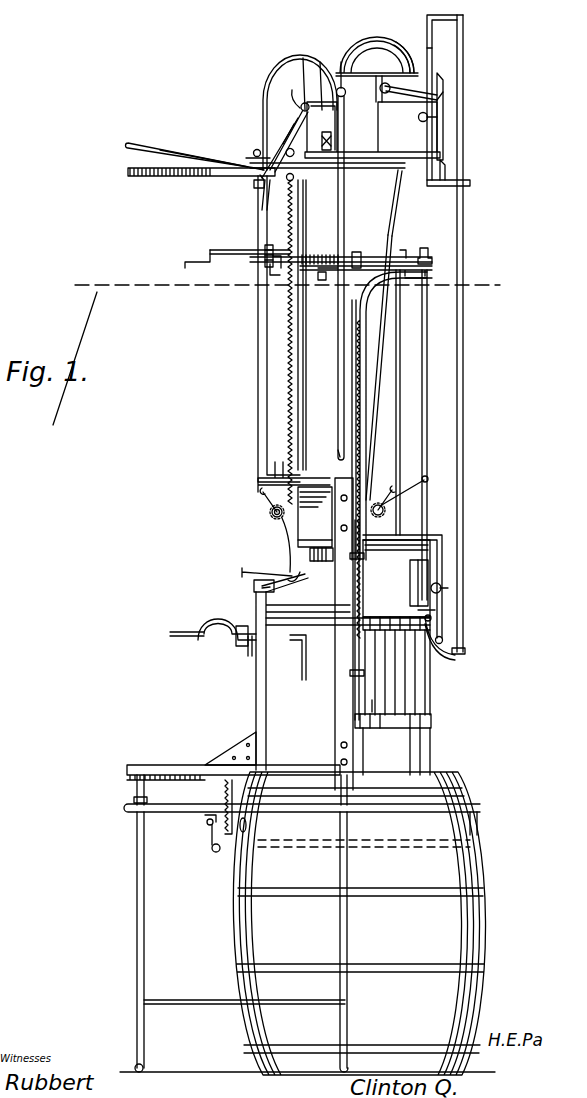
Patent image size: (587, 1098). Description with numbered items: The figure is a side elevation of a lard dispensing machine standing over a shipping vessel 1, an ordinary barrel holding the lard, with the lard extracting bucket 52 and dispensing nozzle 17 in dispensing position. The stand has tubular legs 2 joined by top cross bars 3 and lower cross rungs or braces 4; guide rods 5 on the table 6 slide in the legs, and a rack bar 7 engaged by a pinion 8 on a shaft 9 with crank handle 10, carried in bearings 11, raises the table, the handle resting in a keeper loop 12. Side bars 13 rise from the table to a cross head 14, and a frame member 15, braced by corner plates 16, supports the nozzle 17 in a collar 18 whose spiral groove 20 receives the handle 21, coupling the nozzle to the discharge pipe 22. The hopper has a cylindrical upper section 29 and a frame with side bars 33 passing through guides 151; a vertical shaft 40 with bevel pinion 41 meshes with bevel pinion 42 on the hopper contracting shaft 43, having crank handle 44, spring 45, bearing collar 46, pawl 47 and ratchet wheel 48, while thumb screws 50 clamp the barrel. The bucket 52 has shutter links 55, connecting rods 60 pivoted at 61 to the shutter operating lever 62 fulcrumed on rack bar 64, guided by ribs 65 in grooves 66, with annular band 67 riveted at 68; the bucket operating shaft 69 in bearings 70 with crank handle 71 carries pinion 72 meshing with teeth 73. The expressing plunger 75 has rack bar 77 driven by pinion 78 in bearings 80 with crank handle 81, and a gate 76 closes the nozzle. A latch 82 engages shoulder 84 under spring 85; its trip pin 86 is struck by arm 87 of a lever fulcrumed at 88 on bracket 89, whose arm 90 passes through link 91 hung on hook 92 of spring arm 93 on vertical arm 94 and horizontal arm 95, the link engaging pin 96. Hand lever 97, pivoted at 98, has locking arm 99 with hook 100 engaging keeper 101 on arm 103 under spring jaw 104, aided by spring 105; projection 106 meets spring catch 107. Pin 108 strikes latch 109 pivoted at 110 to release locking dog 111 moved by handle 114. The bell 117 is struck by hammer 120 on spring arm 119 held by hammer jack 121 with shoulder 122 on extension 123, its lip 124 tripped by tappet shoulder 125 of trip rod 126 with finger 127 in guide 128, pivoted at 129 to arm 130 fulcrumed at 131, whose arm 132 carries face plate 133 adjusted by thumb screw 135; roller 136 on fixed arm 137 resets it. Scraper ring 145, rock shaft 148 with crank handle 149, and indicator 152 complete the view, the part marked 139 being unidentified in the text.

The shipping vessel 1 is at (480, 932).
The legs 2 is at (135, 962).
The top cross bars 3 is at (126, 808).
The cross rungs or braces 4 is at (206, 1006).
The guide rods 5 is at (133, 790).
The table 6 is at (125, 770).
The rack bar 7 is at (295, 286).
The pinion 8 is at (207, 825).
The shaft 9 is at (212, 840).
The crank handle 10 is at (215, 853).
The bearings 11 is at (205, 818).
The keeper loop 12 is at (262, 840).
The side bars 13 is at (335, 650).
The cross head 14 is at (315, 517).
The frame member 15 is at (255, 705).
The corner plates or braces 16 is at (236, 756).
The dispensing nozzle 17 is at (205, 616).
The collar 18 is at (256, 590).
The spiral groove 20 is at (236, 642).
The handle 21 is at (248, 652).
The discharge pipe 22 is at (304, 680).
The cylindrical upper section 29 is at (431, 748).
The side bars 33 is at (352, 402).
The vertical shaft 40 is at (428, 384).
The bevel pinion 41 is at (434, 260).
The bevel pinion 42 is at (426, 250).
The hopper contracting shaft 43 is at (226, 250).
The crank handle 44 is at (195, 262).
The spring 45 is at (322, 250).
The fixed bearing collar 46 is at (358, 252).
The pawl 47 is at (271, 245).
The ratchet wheel 48 is at (268, 272).
The thumb screws or nuts 50 is at (348, 762).
The lard extracting bucket 52 is at (468, 693).
The links 55 is at (372, 706).
The connecting rods 60 is at (376, 412).
The pivot 61 is at (400, 185).
The shutter operating lever 62 is at (130, 178).
The rack bar 64 is at (304, 323).
The guide ribs 65 is at (294, 181).
The grooves 66 is at (297, 350).
The annular band 67 is at (332, 640).
The rivets 68 is at (380, 617).
The bucket operating shaft 69 is at (274, 511).
The bearings 70 is at (284, 520).
The crank handle 71 is at (260, 490).
The pinion 72 is at (270, 512).
The teeth 73 is at (288, 375).
The expressing plunger 75 is at (396, 578).
The gate or shutter 76 is at (168, 634).
The rack bar 77 is at (368, 325).
The pinion 78 is at (385, 510).
The bearings 80 is at (382, 490).
The crank handle 81 is at (427, 478).
The latch 82 is at (285, 135).
The shoulder 84 is at (300, 108).
The spring 85 is at (253, 152).
The trip pin 86 is at (290, 130).
The arm 87 is at (321, 64).
The fulcrum 88 is at (304, 58).
The bracket 89 is at (292, 96).
The arm 90 is at (346, 93).
The link 91 is at (345, 192).
The hook 92 is at (372, 80).
The spring arm 93 is at (281, 63).
The vertical arm 94 is at (257, 330).
The horizontal arm 95 is at (312, 477).
The pin 96 is at (322, 282).
The hand operated lever 97 is at (145, 143).
The pivot 98 is at (258, 178).
The locking arm 99 is at (290, 150).
The locking lip or hook 100 is at (337, 111).
The keeper 101 is at (333, 141).
The horizontally projecting arm 103 is at (414, 168).
The spring jaw 104 is at (388, 94).
The spring 105 is at (183, 150).
The projection 106 is at (254, 185).
The spring catch 107 is at (262, 205).
The pin 108 is at (318, 562).
The latch 109 is at (292, 576).
The pivot 110 is at (385, 120).
The locking dog 111 is at (288, 581).
The handle 114 is at (240, 573).
The bell 117 is at (380, 40).
The spring arm 119 is at (402, 62).
The bell hammer 120 is at (413, 88).
The hammer jack 121 is at (447, 96).
The shoulder 122 is at (445, 78).
The extension 123 is at (440, 135).
The lip 124 is at (430, 115).
The tappet shoulder 125 is at (447, 163).
The trip rod 126 is at (464, 230).
The depressing finger 127 is at (437, 48).
The guide 128 is at (472, 183).
The pivot 129 is at (466, 650).
The arm 130 is at (456, 657).
The fulcrum 131 is at (432, 612).
The arm 132 is at (450, 583).
The adjustable face plate 133 is at (410, 585).
The thumb screw 135 is at (442, 586).
The roller 136 is at (444, 638).
The fixed arm 137 is at (443, 545).
The plate 139 is at (430, 570).
The scraper ring 145 is at (432, 722).
The rock shaft 148 is at (401, 344).
The crank handle 149 is at (404, 250).
The guides 151 is at (361, 545).
The indicator 152 is at (275, 470).